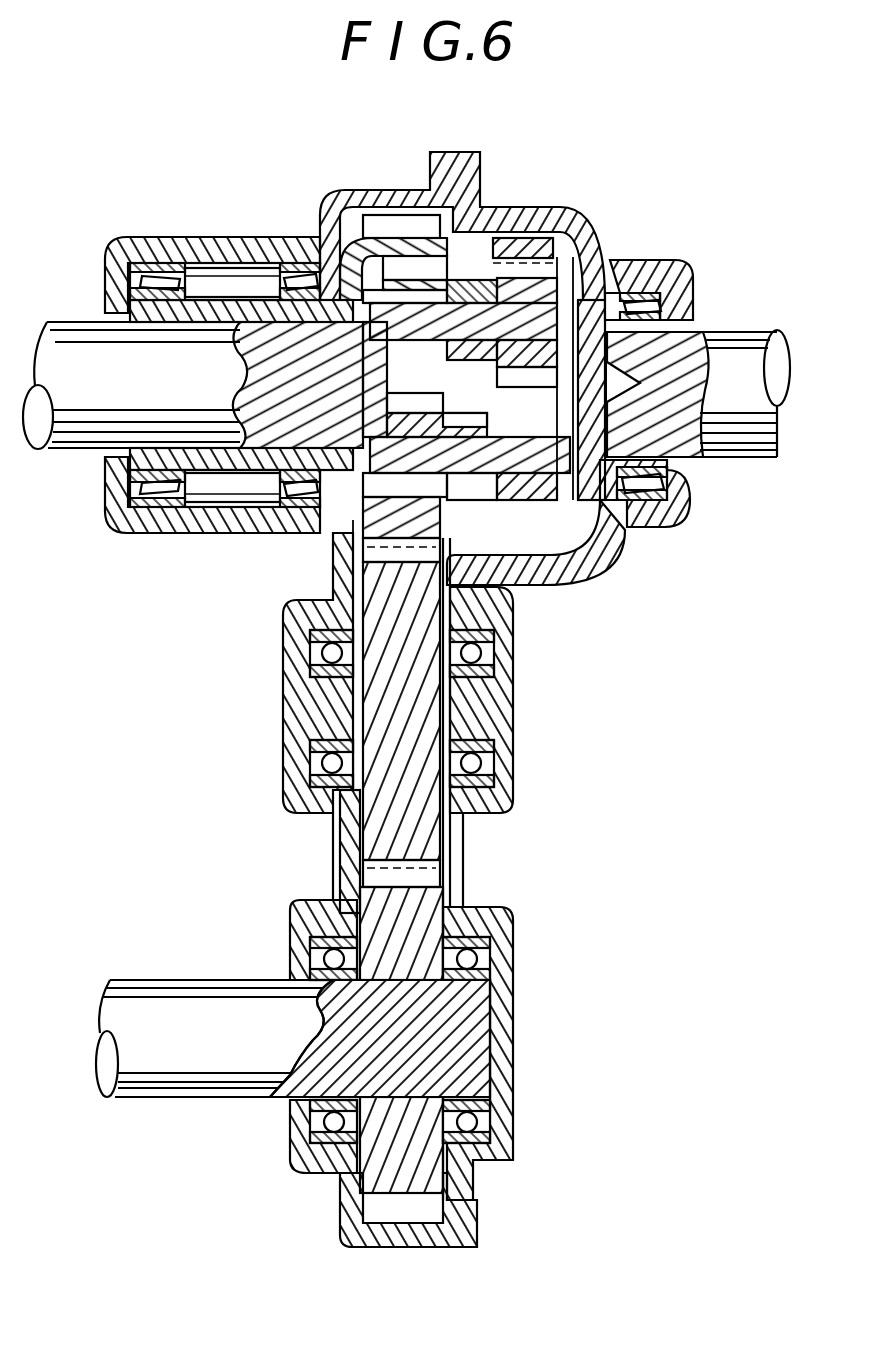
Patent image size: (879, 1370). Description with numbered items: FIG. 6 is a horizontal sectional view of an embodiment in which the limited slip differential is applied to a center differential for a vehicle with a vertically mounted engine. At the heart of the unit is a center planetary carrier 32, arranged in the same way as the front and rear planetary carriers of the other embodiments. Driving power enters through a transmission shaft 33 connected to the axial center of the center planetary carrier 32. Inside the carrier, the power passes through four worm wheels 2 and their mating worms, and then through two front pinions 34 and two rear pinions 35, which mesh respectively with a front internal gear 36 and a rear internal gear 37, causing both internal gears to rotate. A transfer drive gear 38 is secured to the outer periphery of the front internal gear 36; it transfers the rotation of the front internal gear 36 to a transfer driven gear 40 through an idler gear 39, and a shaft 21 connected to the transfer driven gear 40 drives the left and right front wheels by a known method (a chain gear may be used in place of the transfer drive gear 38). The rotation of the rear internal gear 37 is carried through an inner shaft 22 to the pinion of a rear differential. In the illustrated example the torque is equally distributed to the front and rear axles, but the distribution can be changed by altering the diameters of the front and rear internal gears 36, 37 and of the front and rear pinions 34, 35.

The worm wheel 2 is at (466, 428).
The shaft 21 is at (175, 1005).
The inner shaft 22 is at (740, 340).
The center planetary carrier 32 is at (543, 487).
The transmission shaft 33 is at (60, 343).
The front pinion 34 is at (412, 413).
The rear pinion 35 is at (523, 365).
The front internal gear 36 is at (353, 533).
The rear internal gear 37 is at (533, 250).
The transfer drive gear 38 is at (397, 230).
The idler gear 39 is at (423, 848).
The transfer driven gear 40 is at (382, 897).